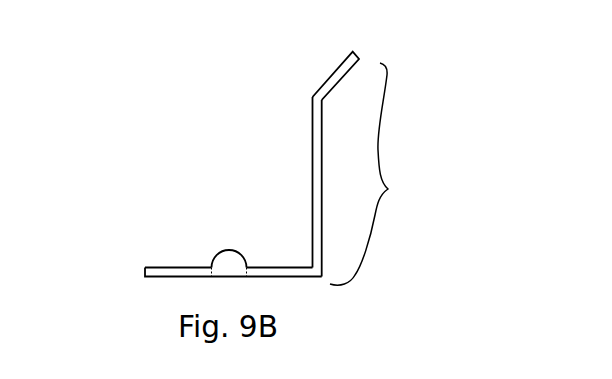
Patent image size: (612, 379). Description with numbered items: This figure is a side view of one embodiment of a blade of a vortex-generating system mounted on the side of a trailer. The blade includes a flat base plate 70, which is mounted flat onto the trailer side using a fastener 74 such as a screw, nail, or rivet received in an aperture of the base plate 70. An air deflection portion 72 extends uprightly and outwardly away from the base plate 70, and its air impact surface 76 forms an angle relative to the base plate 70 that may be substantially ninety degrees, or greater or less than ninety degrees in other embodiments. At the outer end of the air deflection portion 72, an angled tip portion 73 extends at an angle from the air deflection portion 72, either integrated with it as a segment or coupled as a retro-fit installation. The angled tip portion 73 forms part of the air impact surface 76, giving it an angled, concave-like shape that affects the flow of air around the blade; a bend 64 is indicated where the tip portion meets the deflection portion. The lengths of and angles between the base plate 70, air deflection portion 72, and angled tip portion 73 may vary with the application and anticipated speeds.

The base plate 70 is at (153, 266).
The air deflection portion 72 is at (312, 242).
The angled tip portion 73 is at (345, 68).
The fastener 74 is at (213, 257).
The air impact surface 76 is at (375, 174).
The bend 64 is at (306, 180).